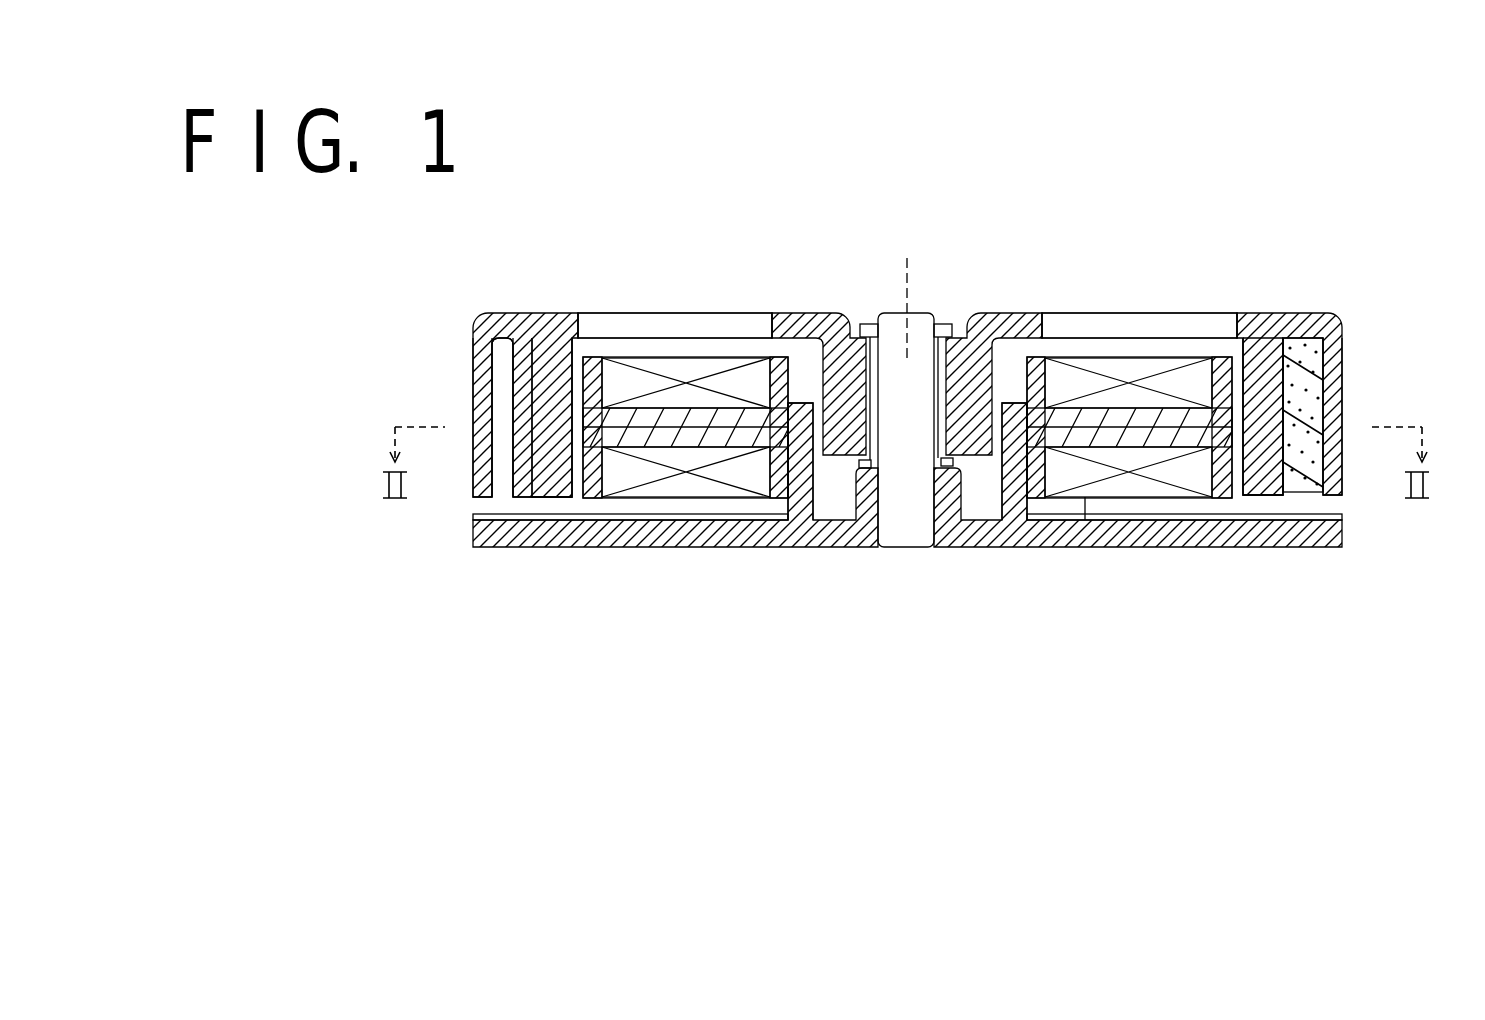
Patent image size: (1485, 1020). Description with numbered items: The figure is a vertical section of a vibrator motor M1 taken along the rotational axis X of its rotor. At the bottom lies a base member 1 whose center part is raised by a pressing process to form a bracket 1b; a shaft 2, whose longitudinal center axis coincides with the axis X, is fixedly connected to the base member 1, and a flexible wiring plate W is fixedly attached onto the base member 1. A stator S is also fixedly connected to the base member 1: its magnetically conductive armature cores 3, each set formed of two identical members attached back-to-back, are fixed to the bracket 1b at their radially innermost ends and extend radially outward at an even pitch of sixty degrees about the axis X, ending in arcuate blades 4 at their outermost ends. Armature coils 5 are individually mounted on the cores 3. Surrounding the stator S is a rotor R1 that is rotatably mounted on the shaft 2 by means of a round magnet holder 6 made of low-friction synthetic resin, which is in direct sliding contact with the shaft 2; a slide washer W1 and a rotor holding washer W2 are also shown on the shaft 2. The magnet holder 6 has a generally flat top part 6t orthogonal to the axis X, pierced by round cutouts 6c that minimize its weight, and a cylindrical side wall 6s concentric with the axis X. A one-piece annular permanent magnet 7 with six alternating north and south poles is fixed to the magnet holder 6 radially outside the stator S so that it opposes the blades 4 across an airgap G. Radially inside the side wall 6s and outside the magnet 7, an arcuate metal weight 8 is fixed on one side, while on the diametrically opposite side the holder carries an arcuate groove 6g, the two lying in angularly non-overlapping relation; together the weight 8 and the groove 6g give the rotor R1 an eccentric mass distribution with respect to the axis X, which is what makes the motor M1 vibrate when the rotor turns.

The base member 1 is at (1212, 535).
The bracket 1b is at (803, 487).
The shaft 2 is at (908, 523).
The armature cores 3 is at (733, 437).
The arcuate blades 4 is at (600, 478).
The armature coils 5 is at (685, 483).
The magnet holder 6 is at (788, 313).
The round cutouts 6c is at (684, 313).
The top part 6t is at (552, 345).
The cylindrical side wall 6s is at (475, 380).
The arcuate groove 6g is at (476, 347).
The annular permanent magnet 7 is at (547, 356).
The arcuate metal weight 8 is at (1303, 353).
The airgap G is at (578, 437).
The stator S is at (1085, 500).
The flexible wiring plate W is at (1322, 525).
The slide washer W1 is at (962, 463).
The rotor holding washer W2 is at (943, 313).
The rotational axis X is at (907, 288).
The vibrator motor M1 is at (1138, 253).
The rotor R1 is at (1313, 311).